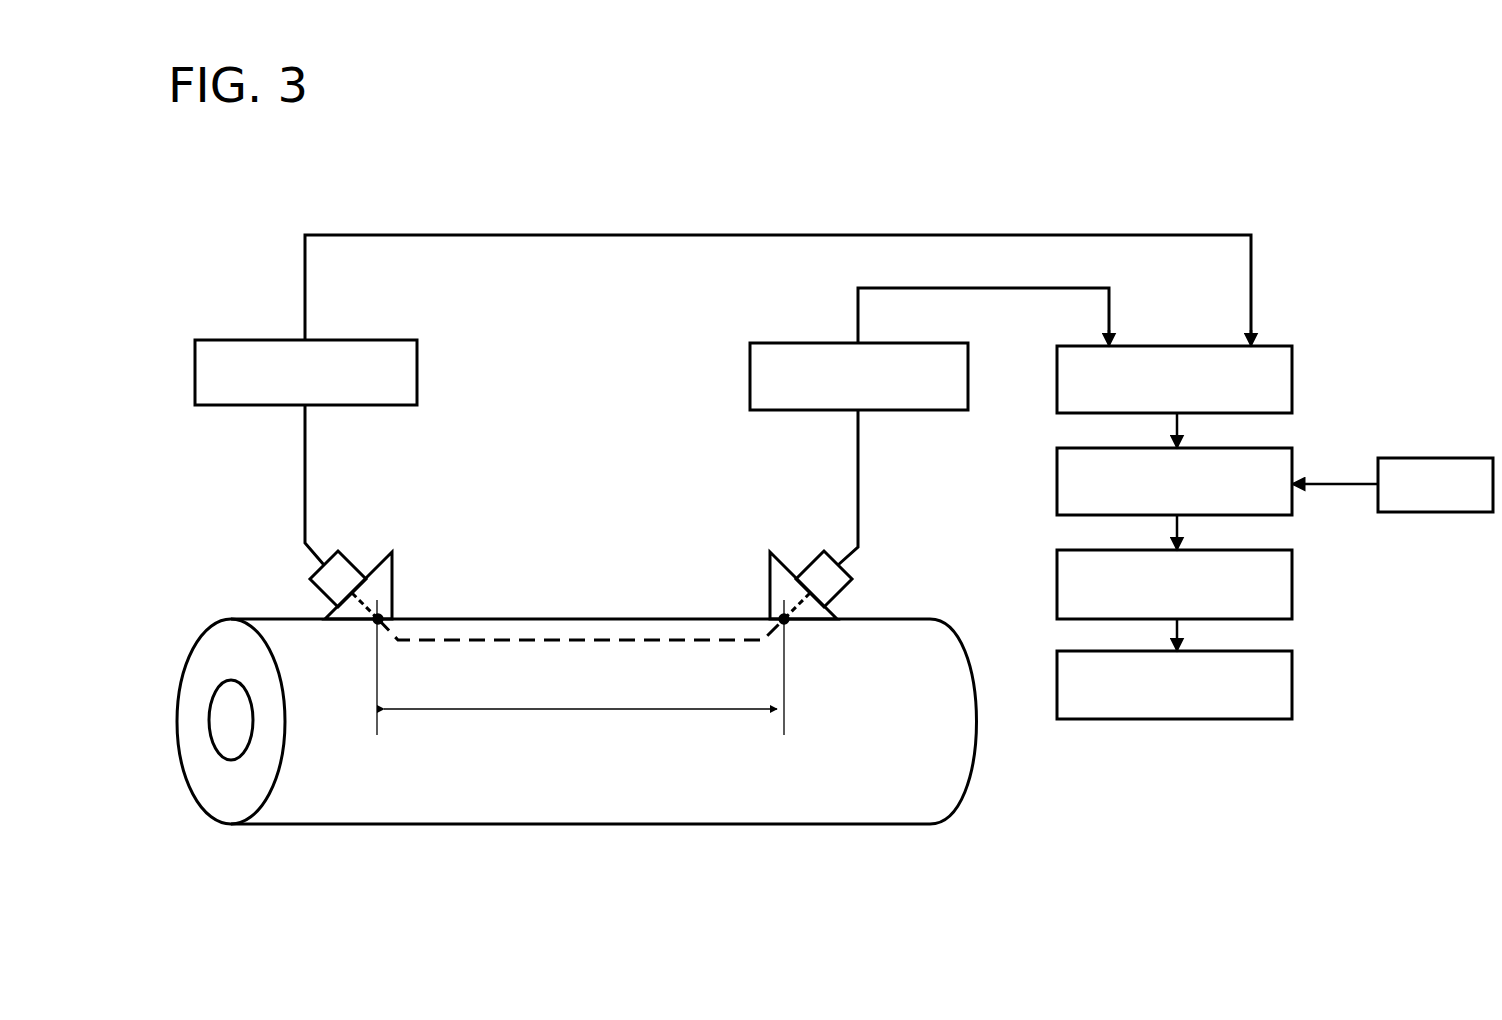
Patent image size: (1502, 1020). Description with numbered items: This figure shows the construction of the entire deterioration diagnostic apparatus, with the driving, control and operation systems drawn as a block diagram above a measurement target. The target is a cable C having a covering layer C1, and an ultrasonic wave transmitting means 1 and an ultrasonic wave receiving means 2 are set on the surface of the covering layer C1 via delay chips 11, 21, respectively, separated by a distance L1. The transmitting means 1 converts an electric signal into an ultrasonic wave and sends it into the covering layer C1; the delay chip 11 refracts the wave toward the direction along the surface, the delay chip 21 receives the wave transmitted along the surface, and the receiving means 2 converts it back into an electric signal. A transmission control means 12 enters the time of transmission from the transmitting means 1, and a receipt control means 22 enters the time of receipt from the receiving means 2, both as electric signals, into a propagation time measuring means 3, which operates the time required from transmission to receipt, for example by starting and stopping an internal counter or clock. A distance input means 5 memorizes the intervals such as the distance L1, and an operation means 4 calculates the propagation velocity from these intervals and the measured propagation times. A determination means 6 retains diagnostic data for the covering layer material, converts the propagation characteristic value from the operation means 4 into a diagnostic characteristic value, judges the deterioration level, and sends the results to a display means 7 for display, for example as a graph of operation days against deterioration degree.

The ultrasonic wave transmitting means 1 is at (320, 575).
The delay chip 11 is at (349, 612).
The transmission control means 12 is at (243, 355).
The ultrasonic wave receiving means 2 is at (836, 583).
The delay chip 21 is at (810, 615).
The receipt control means 22 is at (905, 398).
The propagation time measuring means 3 is at (1253, 362).
The operation means 4 is at (1272, 468).
The distance input means 5 is at (1422, 473).
The determination means 6 is at (1287, 588).
The display means 7 is at (1285, 692).
The cable C is at (312, 795).
The covering layer C1 is at (218, 643).
The distance L1 is at (580, 667).